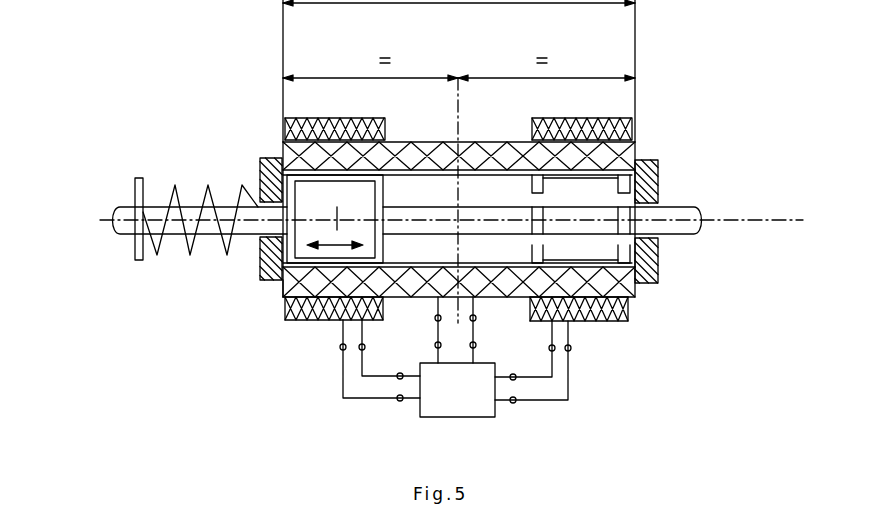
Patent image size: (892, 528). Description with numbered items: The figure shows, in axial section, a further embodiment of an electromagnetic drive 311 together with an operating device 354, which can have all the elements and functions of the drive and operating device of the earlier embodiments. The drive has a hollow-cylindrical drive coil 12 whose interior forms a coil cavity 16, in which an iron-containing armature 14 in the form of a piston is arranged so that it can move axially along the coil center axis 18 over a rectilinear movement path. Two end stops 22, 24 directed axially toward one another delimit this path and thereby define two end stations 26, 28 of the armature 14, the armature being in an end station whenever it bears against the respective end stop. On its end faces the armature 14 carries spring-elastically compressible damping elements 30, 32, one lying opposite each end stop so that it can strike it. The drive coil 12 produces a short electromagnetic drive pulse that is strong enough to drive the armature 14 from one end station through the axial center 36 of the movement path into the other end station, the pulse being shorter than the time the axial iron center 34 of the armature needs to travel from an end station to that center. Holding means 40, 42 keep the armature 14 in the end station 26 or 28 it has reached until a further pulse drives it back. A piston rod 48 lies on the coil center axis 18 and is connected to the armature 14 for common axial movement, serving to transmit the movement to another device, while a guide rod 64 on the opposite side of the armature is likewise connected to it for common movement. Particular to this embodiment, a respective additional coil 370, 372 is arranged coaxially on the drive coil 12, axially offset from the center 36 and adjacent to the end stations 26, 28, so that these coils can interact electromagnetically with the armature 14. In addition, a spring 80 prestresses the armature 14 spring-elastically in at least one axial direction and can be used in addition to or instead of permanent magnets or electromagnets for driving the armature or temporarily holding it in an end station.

The electromagnetic drive 311 is at (672, 70).
The axial center of the movement path 36 is at (459, 77).
The coil center axis 18 is at (761, 219).
The drive coil 12 is at (483, 150).
The coil cavity 16 is at (418, 190).
The armature 14 is at (364, 196).
The end stop 22 is at (235, 152).
The end station 26 is at (303, 158).
The holding means 40 is at (276, 282).
The damping element 30 is at (270, 286).
The end stop 24 is at (668, 152).
The end station 28 is at (628, 163).
The holding means 42 is at (645, 285).
The axial iron center 34 is at (335, 208).
The damping element 32 is at (384, 252).
The piston rod 48 is at (125, 229).
The guide rod 64 is at (679, 207).
The spring 80 is at (186, 241).
The additional coil 370 is at (298, 323).
The additional coil 372 is at (600, 313).
The operating device 354 is at (492, 411).